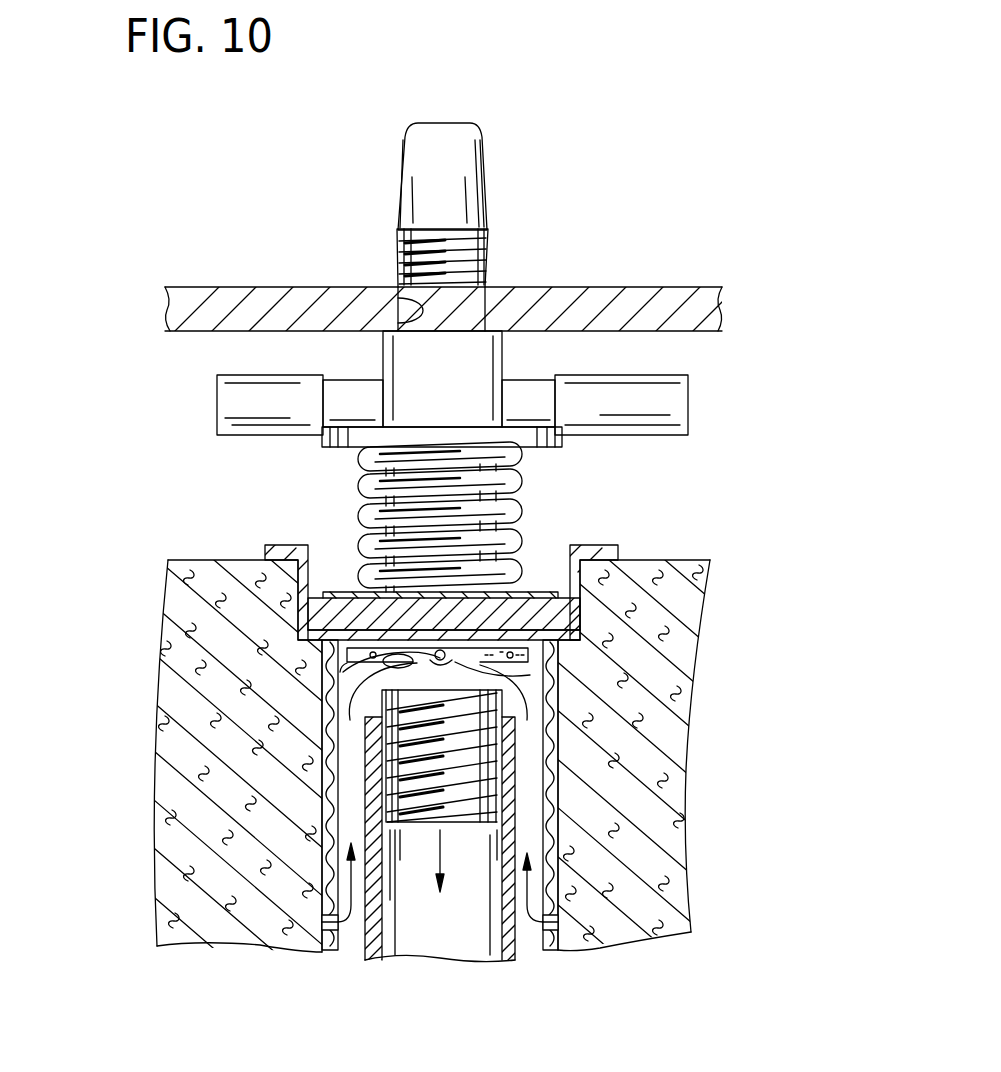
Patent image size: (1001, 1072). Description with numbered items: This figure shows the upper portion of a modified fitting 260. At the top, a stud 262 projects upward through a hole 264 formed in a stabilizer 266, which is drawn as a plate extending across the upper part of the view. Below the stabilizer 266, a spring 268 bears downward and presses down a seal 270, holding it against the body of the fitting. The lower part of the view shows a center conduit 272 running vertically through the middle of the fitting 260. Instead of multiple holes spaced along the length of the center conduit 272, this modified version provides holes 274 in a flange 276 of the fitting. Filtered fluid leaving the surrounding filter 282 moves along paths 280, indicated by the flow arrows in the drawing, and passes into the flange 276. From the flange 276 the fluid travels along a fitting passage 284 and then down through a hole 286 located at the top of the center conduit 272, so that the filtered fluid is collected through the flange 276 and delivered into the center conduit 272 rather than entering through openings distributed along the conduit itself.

The modified fitting 260 is at (740, 396).
The stud 262 is at (488, 193).
The hole 264 is at (398, 322).
The stabilizer 266 is at (625, 287).
The spring 268 is at (525, 490).
The seal 270 is at (555, 612).
The center conduit 272 is at (515, 820).
The holes 274 is at (343, 732).
The flange 276 is at (525, 677).
The paths 280 is at (350, 900).
The filter 282 is at (172, 836).
The fitting passage 284 is at (313, 672).
The hole 286 is at (478, 733).